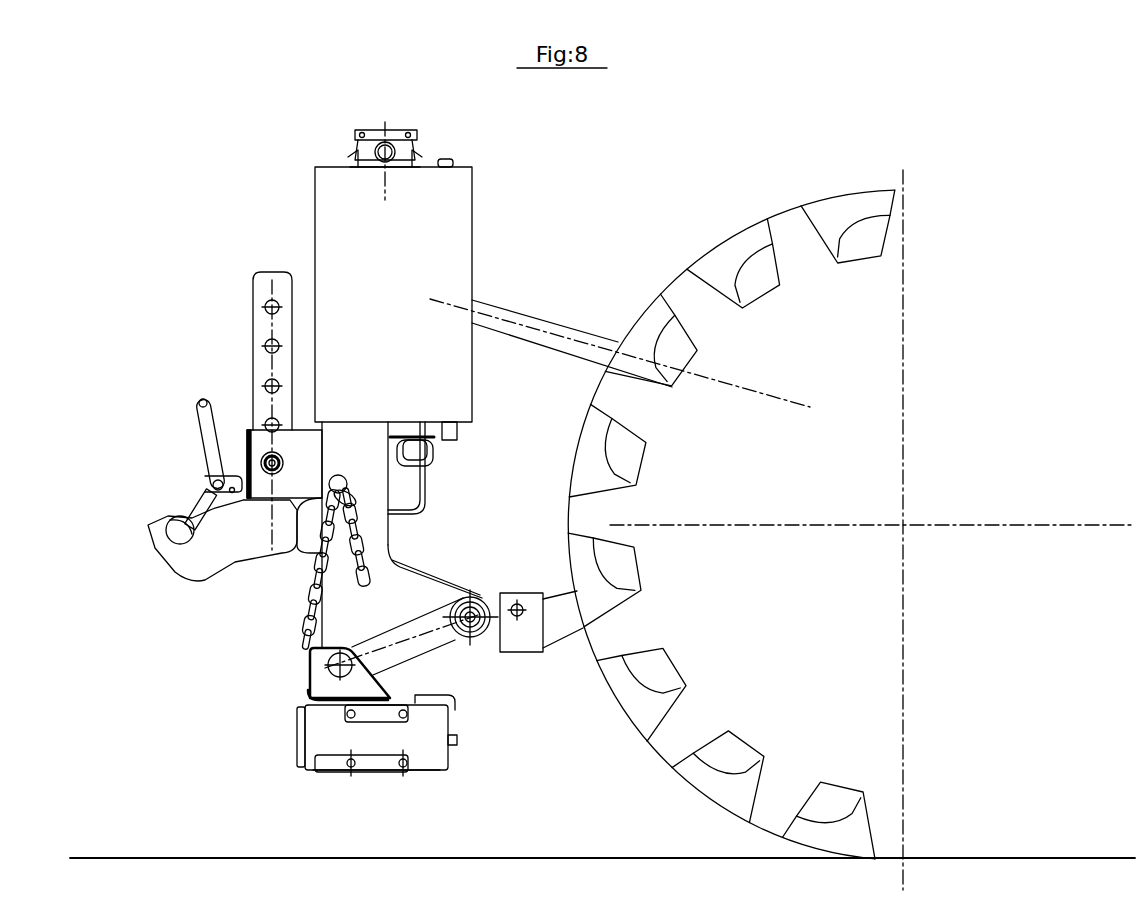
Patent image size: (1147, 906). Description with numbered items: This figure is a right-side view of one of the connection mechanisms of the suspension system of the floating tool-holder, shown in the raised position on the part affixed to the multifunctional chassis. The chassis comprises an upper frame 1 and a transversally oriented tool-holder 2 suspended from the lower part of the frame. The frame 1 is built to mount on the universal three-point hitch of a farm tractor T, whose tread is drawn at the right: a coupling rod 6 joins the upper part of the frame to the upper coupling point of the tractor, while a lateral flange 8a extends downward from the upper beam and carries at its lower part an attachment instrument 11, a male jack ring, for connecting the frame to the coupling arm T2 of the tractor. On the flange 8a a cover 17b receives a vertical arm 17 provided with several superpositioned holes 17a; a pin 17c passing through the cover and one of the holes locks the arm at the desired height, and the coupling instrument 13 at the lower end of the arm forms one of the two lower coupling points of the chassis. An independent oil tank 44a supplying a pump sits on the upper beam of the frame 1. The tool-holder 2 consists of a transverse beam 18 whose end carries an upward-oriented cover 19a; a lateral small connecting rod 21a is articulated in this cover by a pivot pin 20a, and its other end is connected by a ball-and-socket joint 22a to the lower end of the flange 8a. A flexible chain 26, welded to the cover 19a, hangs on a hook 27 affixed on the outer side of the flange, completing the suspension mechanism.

The upper frame 1 is at (292, 548).
The tool-holder 2 is at (297, 748).
The coupling rod 6 is at (495, 310).
The lateral flange 8a is at (417, 590).
The attachment instrument 11 is at (494, 586).
The coupling instrument 13 is at (167, 553).
The vertical arm 17 is at (260, 288).
The superpositioned holes 17a is at (265, 346).
The cover 17b is at (258, 443).
The pin 17c is at (260, 462).
The transverse beam 18 is at (378, 772).
The cover 19a is at (322, 682).
The pivot pin 20a is at (343, 643).
The lateral small connecting rod 21a is at (418, 647).
The ball-and-socket joint 22a is at (483, 643).
The chain 26 is at (380, 515).
The hook 27 is at (355, 492).
The oil tank 44a is at (393, 272).
The tractor T is at (790, 218).
The coupling arm T2 is at (560, 645).